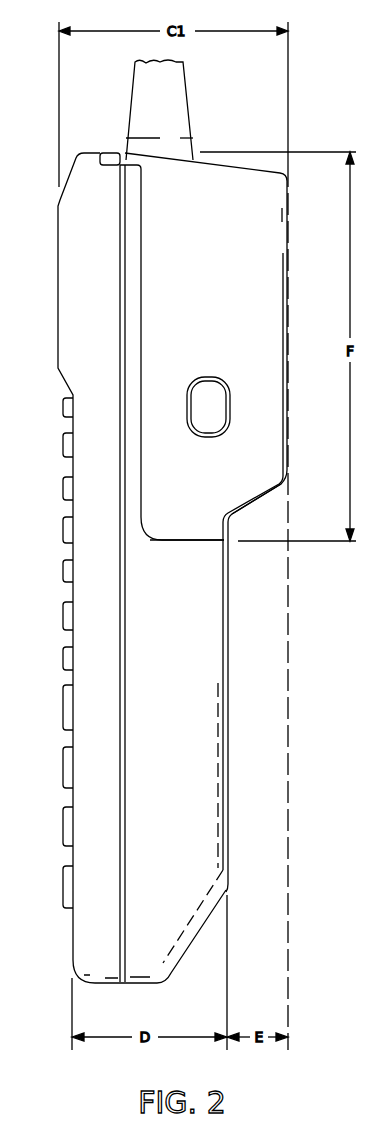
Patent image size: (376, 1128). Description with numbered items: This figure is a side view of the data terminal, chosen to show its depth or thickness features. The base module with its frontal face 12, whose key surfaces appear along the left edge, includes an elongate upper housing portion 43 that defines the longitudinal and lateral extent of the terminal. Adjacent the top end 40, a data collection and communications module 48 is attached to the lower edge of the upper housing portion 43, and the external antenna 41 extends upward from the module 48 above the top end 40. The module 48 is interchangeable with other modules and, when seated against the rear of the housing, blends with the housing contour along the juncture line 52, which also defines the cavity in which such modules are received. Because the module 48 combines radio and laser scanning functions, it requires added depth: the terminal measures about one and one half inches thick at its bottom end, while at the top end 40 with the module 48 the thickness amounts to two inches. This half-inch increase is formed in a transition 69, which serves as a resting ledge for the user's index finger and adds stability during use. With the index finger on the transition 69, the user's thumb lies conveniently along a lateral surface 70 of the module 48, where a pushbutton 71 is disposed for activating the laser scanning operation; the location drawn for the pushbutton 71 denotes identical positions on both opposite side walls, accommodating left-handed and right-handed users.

The frontal face 12 is at (75, 550).
The top end 40 is at (87, 152).
The antenna 41 is at (180, 92).
The upper housing portion 43 is at (90, 502).
The data collection and communications module 48 is at (289, 280).
The juncture line 52 is at (174, 538).
The transition 69 is at (245, 503).
The lateral surface 70 is at (280, 353).
The pushbutton 71 is at (200, 373).